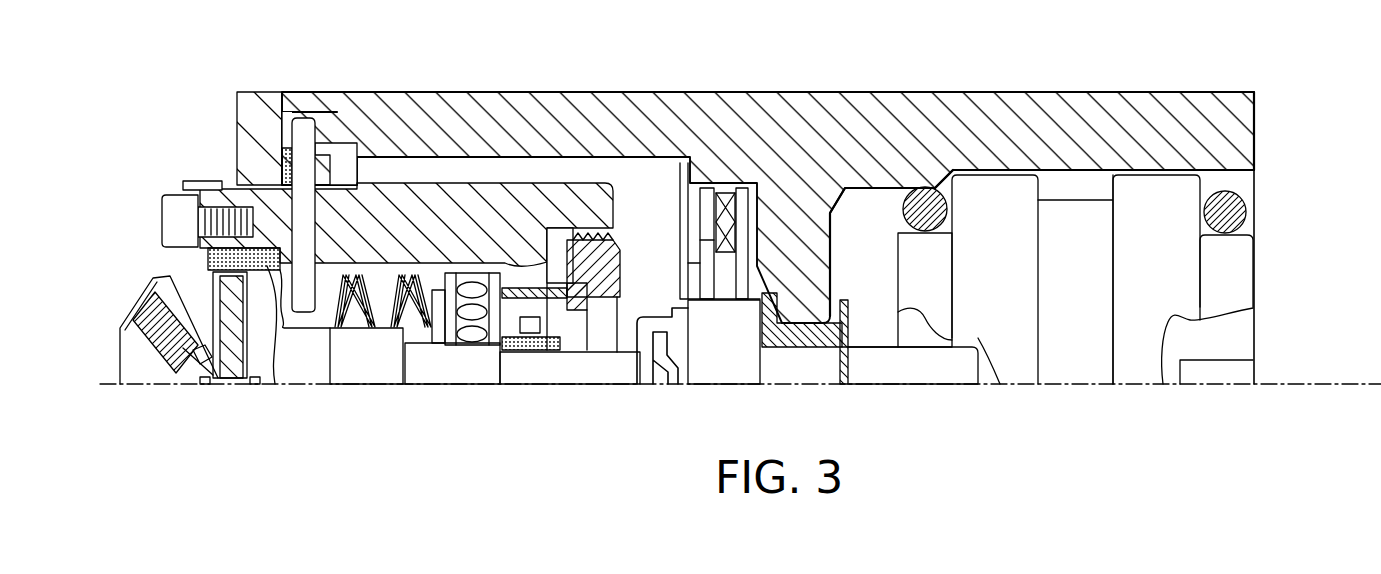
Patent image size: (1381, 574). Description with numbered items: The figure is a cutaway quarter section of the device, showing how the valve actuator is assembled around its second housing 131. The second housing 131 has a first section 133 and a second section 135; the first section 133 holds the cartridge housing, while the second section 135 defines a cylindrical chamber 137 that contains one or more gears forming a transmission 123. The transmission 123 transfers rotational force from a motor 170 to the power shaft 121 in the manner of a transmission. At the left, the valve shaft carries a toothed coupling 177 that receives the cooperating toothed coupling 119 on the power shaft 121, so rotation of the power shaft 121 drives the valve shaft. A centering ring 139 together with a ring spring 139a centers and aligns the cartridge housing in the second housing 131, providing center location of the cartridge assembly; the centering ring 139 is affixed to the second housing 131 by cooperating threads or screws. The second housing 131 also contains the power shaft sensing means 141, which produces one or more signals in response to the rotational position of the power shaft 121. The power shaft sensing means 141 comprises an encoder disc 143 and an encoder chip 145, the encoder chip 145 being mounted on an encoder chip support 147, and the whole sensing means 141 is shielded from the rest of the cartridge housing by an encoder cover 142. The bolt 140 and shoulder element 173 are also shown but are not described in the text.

The toothed coupling 119 is at (684, 386).
The power shaft 121 is at (880, 379).
The transmission 123 is at (1005, 340).
The second housing 131 is at (953, 92).
The first section 133 is at (511, 92).
The second section 135 is at (1152, 92).
The cylindrical chamber 137 is at (1068, 186).
The centering ring 139 is at (247, 92).
The ring spring 139a is at (283, 150).
The bolt 140 is at (331, 142).
The power shaft sensing means 141 is at (710, 245).
The encoder cover 142 is at (681, 233).
The encoder disc 143 is at (707, 192).
The encoder chip 145 is at (727, 200).
The encoder chip support 147 is at (744, 208).
The motor 170 is at (1330, 102).
The shaft shoulder 173 is at (1214, 376).
The toothed coupling 177 is at (657, 386).